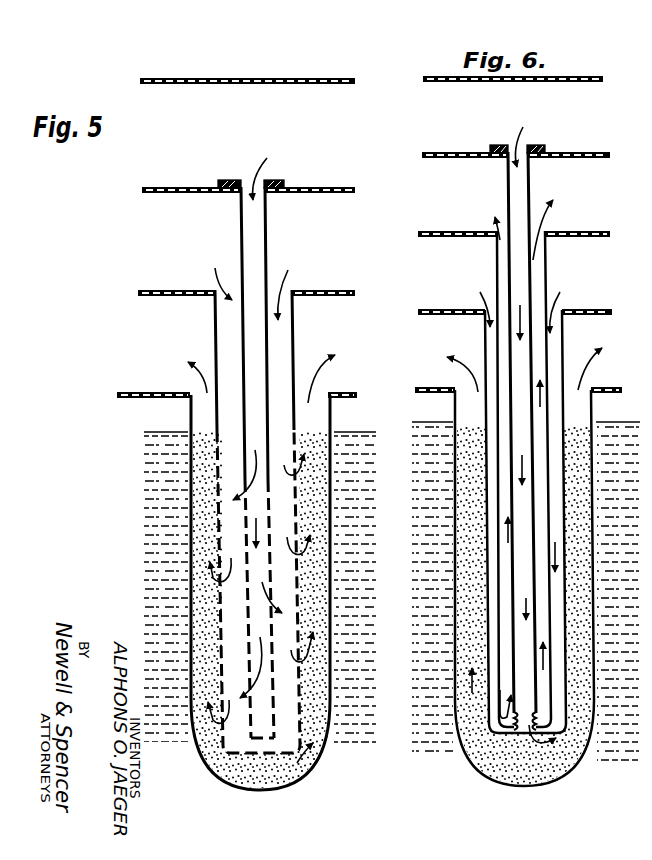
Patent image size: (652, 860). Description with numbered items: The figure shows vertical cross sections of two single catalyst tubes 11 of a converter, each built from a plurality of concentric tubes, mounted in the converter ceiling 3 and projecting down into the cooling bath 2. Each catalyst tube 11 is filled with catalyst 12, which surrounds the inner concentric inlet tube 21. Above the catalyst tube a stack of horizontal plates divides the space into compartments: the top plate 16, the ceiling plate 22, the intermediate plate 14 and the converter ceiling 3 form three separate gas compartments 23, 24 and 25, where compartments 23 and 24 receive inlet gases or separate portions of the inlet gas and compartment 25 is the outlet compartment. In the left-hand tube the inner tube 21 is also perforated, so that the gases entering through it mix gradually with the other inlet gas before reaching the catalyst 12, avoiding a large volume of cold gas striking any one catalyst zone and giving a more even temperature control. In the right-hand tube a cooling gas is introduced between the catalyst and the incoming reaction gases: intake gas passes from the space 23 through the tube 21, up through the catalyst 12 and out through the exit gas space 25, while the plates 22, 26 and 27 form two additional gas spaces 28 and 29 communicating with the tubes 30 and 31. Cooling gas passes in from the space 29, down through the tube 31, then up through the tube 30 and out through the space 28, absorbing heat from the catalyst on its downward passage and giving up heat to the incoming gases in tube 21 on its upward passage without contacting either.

In FIG. 5, the cooling bath 2 is at (356, 430).
In FIG. 6, the cooling bath 2 is at (620, 420).
In FIG. 5, the converter ceiling 3 is at (357, 392).
In FIG. 6, the converter ceiling 3 is at (618, 388).
In FIG. 5, the catalyst tube 11 is at (191, 413).
In FIG. 6, the catalyst tube 11 is at (455, 404).
In FIG. 5, the catalyst 12 is at (312, 507).
In FIG. 6, the catalyst 12 is at (580, 522).
In FIG. 5, the intermediate plate 14 is at (353, 290).
In FIG. 5, the top plate 16 is at (352, 80).
In FIG. 6, the top plate 16 is at (602, 78).
In FIG. 6, the inner tube 21 is at (532, 173).
In FIG. 5, the ceiling plate 22 is at (353, 188).
In FIG. 6, the ceiling plate 22 is at (606, 144).
In FIG. 5, the gas compartment 23 is at (212, 435).
In FIG. 6, the gas compartment 23 is at (547, 136).
In FIG. 5, the gas compartment 24 is at (223, 491).
In FIG. 5, the outlet compartment 25 is at (238, 372).
In FIG. 6, the outlet compartment 25 is at (514, 361).
In FIG. 6, the plate 26 is at (600, 231).
In FIG. 6, the plate 27 is at (606, 310).
In FIG. 6, the gas space 28 is at (493, 223).
In FIG. 6, the gas space 29 is at (494, 296).
In FIG. 6, the tube 30 is at (548, 252).
In FIG. 6, the tube 31 is at (566, 335).